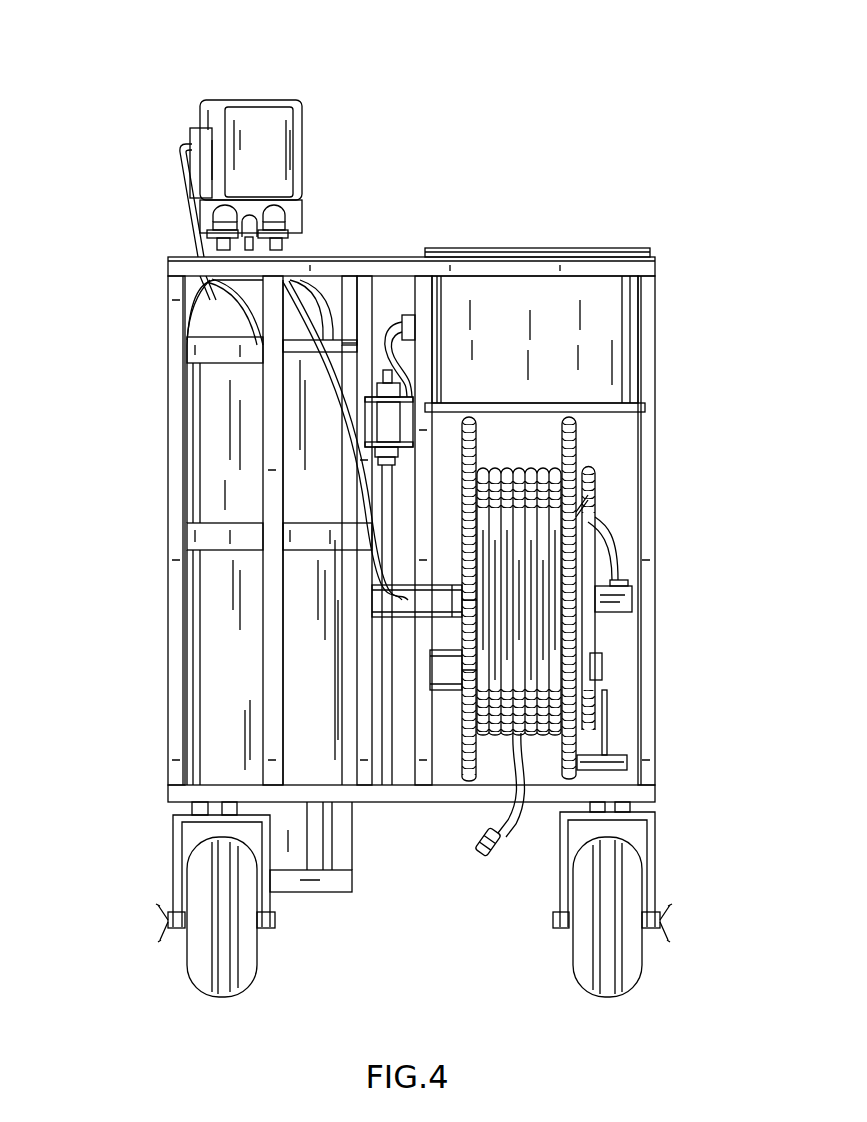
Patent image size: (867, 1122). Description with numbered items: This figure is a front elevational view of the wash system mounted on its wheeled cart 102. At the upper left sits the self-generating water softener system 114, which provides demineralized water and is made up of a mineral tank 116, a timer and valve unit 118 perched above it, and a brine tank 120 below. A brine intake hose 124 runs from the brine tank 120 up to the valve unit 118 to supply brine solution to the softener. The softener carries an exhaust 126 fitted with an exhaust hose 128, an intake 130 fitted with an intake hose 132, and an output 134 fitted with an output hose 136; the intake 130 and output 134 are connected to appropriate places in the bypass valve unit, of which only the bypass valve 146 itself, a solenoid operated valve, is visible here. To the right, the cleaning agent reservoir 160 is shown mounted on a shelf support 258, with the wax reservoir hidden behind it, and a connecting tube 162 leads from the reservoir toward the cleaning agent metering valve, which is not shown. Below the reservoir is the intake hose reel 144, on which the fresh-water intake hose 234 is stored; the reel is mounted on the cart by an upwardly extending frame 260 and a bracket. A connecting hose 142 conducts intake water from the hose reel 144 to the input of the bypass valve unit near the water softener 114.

The cart 102 is at (175, 322).
The water softener system 114 is at (231, 84).
The mineral tank 116 is at (213, 402).
The timer and valve unit 118 is at (272, 100).
The brine tank 120 is at (210, 677).
The brine intake hose 124 is at (178, 168).
The exhaust 126 is at (298, 223).
The exhaust hose 128 is at (293, 233).
The intake 130 is at (284, 208).
The intake hose 132 is at (290, 247).
The output 134 is at (212, 217).
The output hose 136 is at (223, 245).
The connecting hose 142 is at (390, 563).
The intake hose reel 144 is at (590, 627).
The bypass valve 146 is at (372, 372).
The cleaning agent reservoir 160 is at (612, 325).
The connecting tube 162 is at (400, 318).
The intake hose 234 is at (518, 827).
The shelf support 258 is at (638, 405).
The upwardly extending frame 260 is at (412, 773).